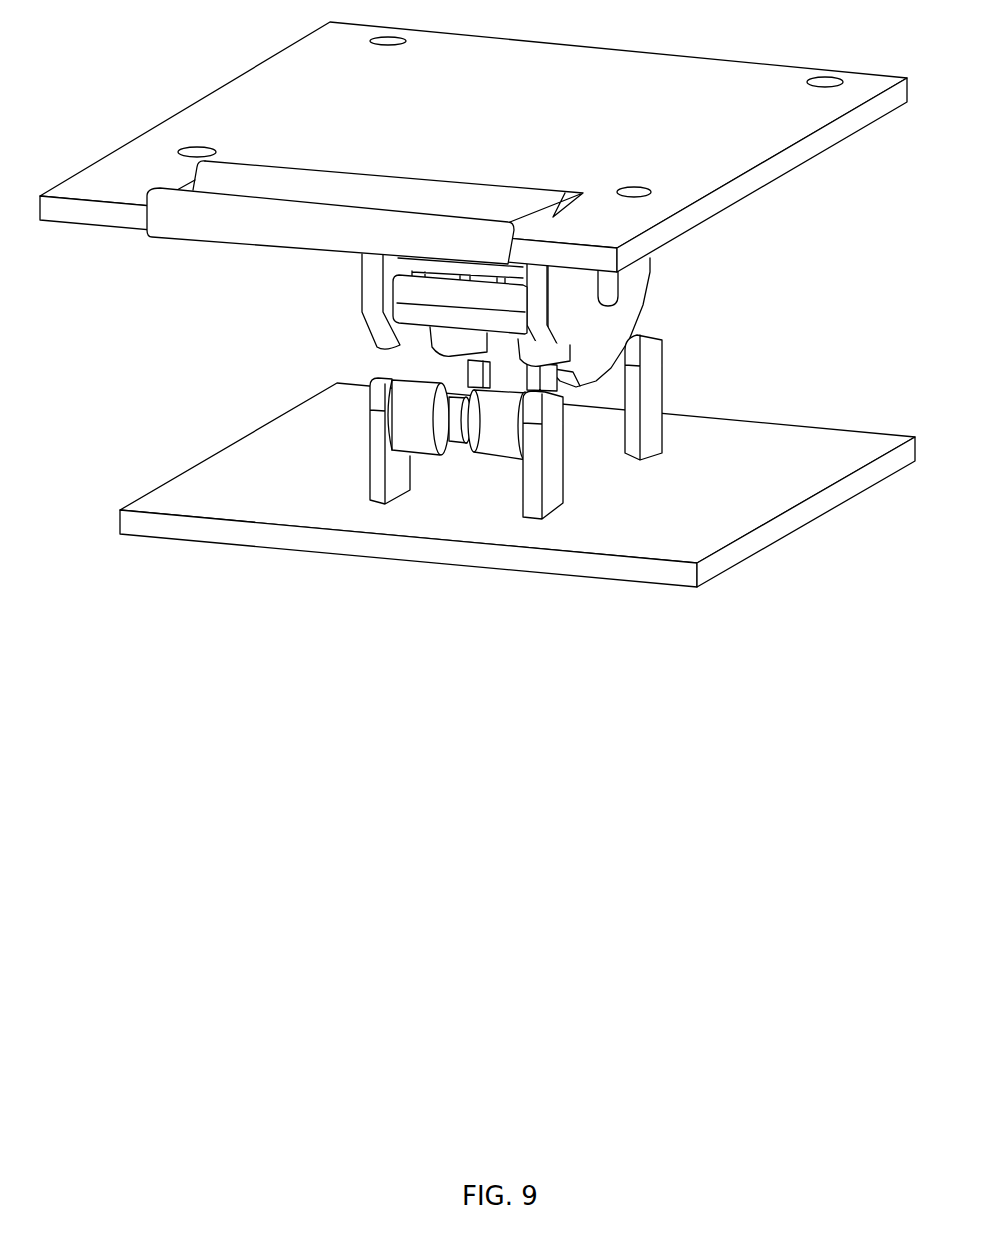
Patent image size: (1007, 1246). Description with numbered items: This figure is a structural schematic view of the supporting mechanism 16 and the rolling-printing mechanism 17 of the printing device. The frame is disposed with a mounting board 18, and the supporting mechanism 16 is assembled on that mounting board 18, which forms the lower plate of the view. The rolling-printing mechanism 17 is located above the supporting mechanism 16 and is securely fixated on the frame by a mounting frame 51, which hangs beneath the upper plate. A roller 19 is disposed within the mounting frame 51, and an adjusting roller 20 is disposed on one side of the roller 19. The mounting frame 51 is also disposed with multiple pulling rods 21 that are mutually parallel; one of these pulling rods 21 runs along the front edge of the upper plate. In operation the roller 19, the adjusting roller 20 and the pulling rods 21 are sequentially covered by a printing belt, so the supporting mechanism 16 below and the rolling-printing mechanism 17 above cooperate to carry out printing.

The supporting mechanism 16 is at (508, 455).
The rolling-printing mechanism 17 is at (473, 243).
The mounting board 18 is at (287, 536).
The roller 19 is at (450, 333).
The adjusting roller 20 is at (413, 285).
The pulling rods 21 is at (292, 237).
The mounting frame 51 is at (602, 328).